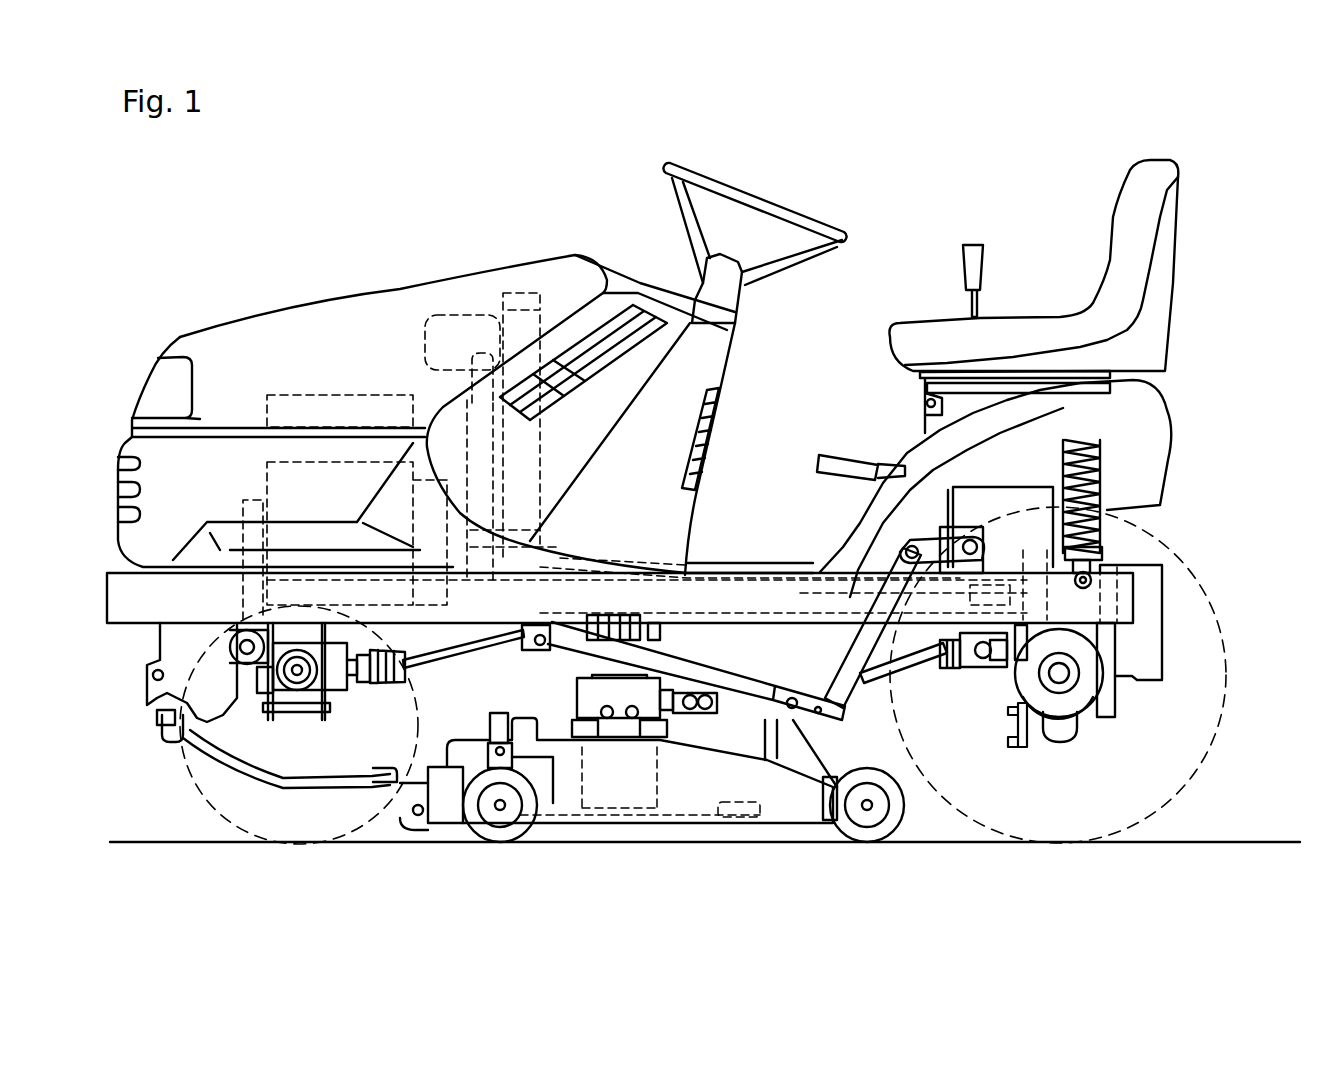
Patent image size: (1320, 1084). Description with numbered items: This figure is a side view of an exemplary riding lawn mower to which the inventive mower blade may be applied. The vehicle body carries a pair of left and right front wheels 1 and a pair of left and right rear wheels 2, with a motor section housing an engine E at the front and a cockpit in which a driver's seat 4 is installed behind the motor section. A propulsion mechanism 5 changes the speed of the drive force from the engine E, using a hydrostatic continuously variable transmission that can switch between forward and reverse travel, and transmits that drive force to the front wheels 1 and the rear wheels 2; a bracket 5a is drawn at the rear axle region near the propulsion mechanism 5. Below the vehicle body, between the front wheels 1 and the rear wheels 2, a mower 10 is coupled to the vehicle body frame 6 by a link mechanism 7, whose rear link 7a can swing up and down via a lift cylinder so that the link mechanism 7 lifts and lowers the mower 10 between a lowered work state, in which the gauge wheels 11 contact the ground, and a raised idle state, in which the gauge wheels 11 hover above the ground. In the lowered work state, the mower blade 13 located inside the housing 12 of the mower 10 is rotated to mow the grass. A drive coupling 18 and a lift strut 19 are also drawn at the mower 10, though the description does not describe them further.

The engine E is at (337, 380).
The front wheels 1 is at (187, 780).
The rear wheels 2 is at (1220, 750).
The driver's seat 4 is at (1107, 232).
The propulsion mechanism 5 is at (1143, 670).
The rear axle bracket 5a is at (1010, 667).
The vehicle body frame 6 is at (470, 627).
The link mechanism 7 is at (320, 800).
The rear link 7a is at (670, 668).
The mower 10 is at (442, 747).
The gauge wheels 11 is at (500, 835).
The housing 12 is at (807, 822).
The mower blade 13 is at (727, 830).
The deck drive coupling 18 is at (672, 704).
The lift strut 19 is at (873, 670).